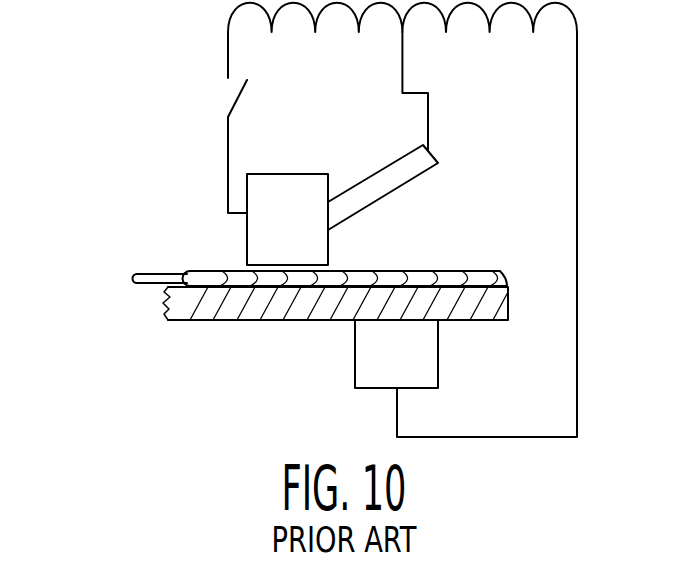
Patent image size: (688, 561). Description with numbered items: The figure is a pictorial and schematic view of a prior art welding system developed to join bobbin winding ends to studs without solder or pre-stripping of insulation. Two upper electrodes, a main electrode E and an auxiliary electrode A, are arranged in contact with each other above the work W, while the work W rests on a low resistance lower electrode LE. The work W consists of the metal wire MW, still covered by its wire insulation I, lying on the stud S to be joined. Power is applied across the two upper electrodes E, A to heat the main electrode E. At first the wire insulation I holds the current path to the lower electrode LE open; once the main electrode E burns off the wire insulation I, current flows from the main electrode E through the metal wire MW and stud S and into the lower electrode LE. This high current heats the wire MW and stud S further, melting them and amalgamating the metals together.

The main electrode E is at (252, 240).
The auxiliary electrode A is at (386, 186).
The metal wire MW is at (166, 278).
The wire insulation I is at (207, 275).
The stud S is at (195, 312).
The work W is at (121, 273).
The lower electrode LE is at (363, 368).